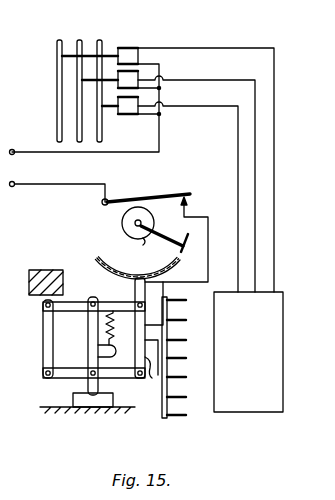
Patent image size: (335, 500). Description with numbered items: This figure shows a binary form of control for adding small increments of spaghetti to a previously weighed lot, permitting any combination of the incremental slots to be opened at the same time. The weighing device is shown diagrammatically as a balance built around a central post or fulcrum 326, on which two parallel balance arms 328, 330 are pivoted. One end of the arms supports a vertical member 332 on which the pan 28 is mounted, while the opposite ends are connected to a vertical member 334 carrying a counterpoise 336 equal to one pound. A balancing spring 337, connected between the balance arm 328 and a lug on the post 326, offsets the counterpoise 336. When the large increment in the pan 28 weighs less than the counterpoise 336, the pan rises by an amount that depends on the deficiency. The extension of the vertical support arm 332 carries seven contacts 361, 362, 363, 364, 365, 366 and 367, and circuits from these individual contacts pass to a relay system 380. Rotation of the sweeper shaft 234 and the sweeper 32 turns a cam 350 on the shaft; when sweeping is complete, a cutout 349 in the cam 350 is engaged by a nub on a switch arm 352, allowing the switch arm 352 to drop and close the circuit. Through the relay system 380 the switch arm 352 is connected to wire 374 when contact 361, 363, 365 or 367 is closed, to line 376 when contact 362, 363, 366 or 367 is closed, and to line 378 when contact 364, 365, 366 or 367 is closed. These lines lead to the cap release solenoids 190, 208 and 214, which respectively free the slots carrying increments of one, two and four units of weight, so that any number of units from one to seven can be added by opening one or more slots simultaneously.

The solenoid 214 is at (130, 46).
The solenoid 208 is at (132, 80).
The solenoid 190 is at (131, 113).
The wire 374 is at (238, 157).
The line 376 is at (256, 182).
The line 378 is at (258, 209).
The switch arm 352 is at (168, 194).
The sweeper shaft 234 is at (121, 223).
The cam 350 is at (122, 236).
The sweeper 32 is at (173, 240).
The cutout 349 is at (137, 264).
The pan 28 is at (104, 268).
The counterpoise 336 is at (58, 269).
The vertical member 334 is at (43, 320).
The balance arm 330 is at (58, 378).
The central post 326 is at (90, 333).
The balance arm 328 is at (90, 308).
The balancing spring 337 is at (98, 351).
The vertical member 332 is at (140, 379).
The contact 361 is at (172, 300).
The contact 362 is at (188, 320).
The contact 363 is at (188, 340).
The contact 364 is at (188, 358).
The contact 365 is at (188, 377).
The contact 366 is at (188, 397).
The contact 367 is at (186, 416).
The relay system 380 is at (262, 318).